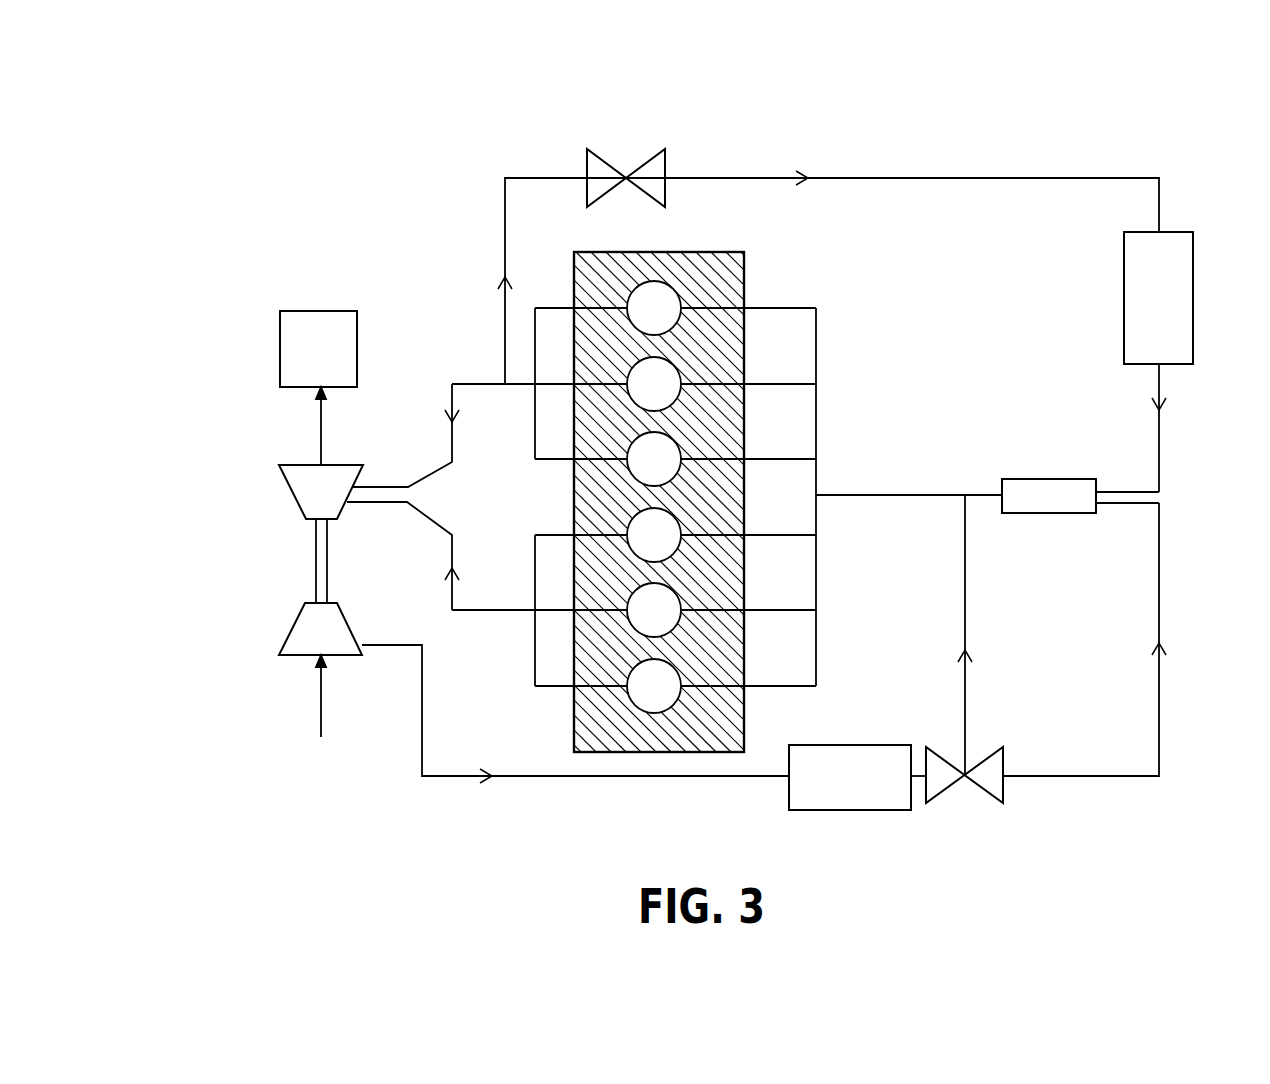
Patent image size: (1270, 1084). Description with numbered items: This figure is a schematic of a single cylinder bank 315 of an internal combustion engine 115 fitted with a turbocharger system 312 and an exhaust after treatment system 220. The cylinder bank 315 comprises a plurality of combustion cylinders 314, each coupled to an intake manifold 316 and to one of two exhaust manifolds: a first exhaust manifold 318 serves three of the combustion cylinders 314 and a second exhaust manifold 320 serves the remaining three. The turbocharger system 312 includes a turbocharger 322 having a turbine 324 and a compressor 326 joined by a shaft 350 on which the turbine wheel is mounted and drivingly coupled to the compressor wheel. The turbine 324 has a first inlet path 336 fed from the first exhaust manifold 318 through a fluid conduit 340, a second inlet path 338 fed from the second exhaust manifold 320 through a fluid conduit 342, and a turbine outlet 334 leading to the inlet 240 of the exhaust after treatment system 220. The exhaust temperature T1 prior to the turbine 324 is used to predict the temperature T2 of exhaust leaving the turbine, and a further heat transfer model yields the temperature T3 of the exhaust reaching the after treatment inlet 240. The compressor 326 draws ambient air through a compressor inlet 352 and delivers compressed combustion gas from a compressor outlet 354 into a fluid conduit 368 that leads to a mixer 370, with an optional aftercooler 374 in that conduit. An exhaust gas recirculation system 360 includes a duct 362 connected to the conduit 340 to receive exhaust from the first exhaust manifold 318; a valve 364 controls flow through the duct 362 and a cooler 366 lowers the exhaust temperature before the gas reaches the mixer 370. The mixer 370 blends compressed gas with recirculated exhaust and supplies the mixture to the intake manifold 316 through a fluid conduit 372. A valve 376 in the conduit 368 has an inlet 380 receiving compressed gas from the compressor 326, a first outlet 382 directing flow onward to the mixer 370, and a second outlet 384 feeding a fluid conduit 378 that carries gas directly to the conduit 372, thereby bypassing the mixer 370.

The internal combustion engine 115 is at (340, 196).
The exhaust after treatment system 220 is at (280, 338).
The inlet 240 is at (318, 394).
The turbocharger system 312 is at (287, 718).
The combustion cylinder 314 is at (671, 319).
The cylinder bank 315 is at (752, 257).
The intake manifold 316 is at (817, 412).
The first exhaust manifold 318 is at (535, 432).
The second exhaust manifold 320 is at (535, 637).
The turbocharger 322 is at (273, 560).
The turbine 324 is at (283, 492).
The compressor 326 is at (294, 627).
The turbine outlet 334 is at (320, 462).
The first inlet path 336 is at (360, 480).
The second inlet path 338 is at (344, 510).
The fluid conduit 340 is at (452, 376).
The fluid conduit 342 is at (470, 609).
The shaft 350 is at (328, 572).
The compressor inlet 352 is at (312, 654).
The compressor outlet 354 is at (362, 654).
The exhaust gas recirculation system 360 is at (1003, 152).
The duct 362 is at (503, 218).
The valve 364 is at (630, 160).
The cooler 366 is at (1180, 295).
The fluid conduit 368 is at (635, 780).
The mixer 370 is at (1045, 478).
The fluid conduit 372 is at (900, 497).
The aftercooler 374 is at (835, 812).
The valve 376 is at (1000, 790).
The fluid conduit 378 is at (966, 584).
The inlet 380 is at (918, 780).
The first outlet 382 is at (1005, 765).
The second outlet 384 is at (962, 770).
The exhaust temperature prior to the turbine T1 is at (385, 484).
The predicted turbine outlet temperature T2 is at (322, 456).
The after treatment inlet temperature T3 is at (326, 395).